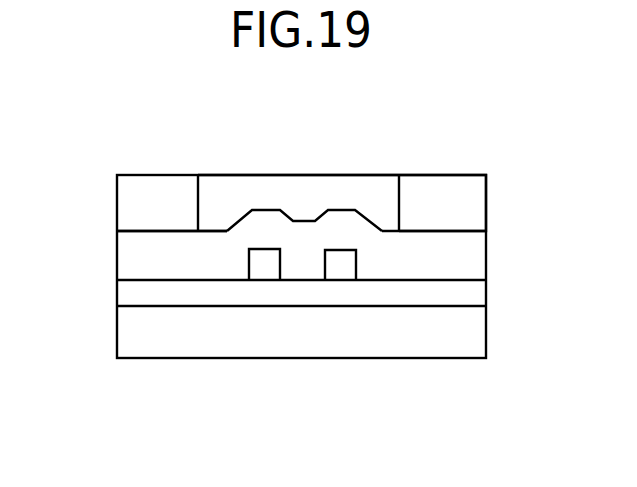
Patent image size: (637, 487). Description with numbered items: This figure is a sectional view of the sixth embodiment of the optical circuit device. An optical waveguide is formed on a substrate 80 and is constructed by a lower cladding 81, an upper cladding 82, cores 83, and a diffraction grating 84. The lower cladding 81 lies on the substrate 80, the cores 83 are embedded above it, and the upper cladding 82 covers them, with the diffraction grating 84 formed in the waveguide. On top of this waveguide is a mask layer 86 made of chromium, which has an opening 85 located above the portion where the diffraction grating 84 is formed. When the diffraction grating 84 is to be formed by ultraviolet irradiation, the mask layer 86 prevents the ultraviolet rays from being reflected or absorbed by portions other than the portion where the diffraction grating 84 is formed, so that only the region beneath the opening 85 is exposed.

The substrate 80 is at (385, 358).
The lower cladding 81 is at (128, 297).
The upper cladding 82 is at (128, 257).
The cores 83 is at (261, 258).
The diffraction grating 84 is at (267, 210).
The opening 85 is at (360, 187).
The mask layer 86 is at (447, 187).